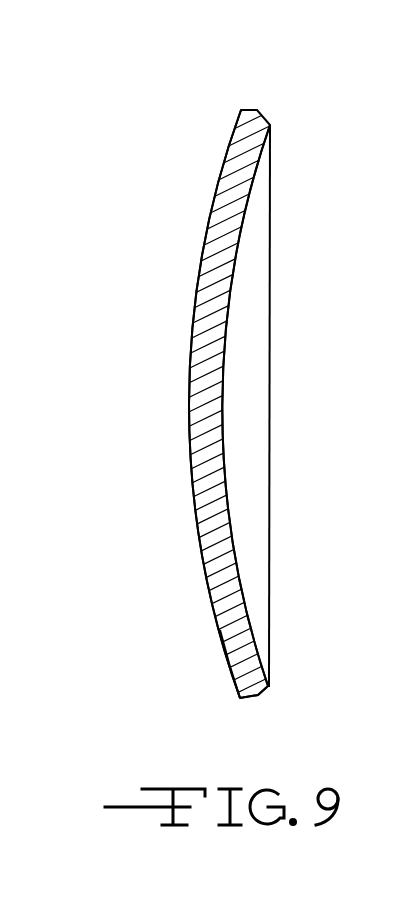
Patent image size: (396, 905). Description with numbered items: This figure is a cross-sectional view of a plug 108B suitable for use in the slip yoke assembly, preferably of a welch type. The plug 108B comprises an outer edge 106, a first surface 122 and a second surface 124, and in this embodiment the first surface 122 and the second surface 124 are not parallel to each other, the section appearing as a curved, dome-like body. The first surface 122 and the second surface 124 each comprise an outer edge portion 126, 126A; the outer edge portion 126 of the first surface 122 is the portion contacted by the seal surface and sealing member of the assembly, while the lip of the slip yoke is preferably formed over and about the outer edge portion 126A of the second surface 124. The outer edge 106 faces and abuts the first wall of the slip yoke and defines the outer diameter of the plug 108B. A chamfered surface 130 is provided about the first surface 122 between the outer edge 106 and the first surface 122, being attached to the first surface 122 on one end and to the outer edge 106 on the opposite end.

The plug 108B is at (292, 183).
The first surface 122 is at (260, 555).
The second surface 124 is at (195, 483).
The outer edge portion 126 is at (258, 644).
The outer edge portion 126A is at (231, 660).
The chamfered surface 130 is at (267, 690).
The outer edge 106 is at (250, 702).